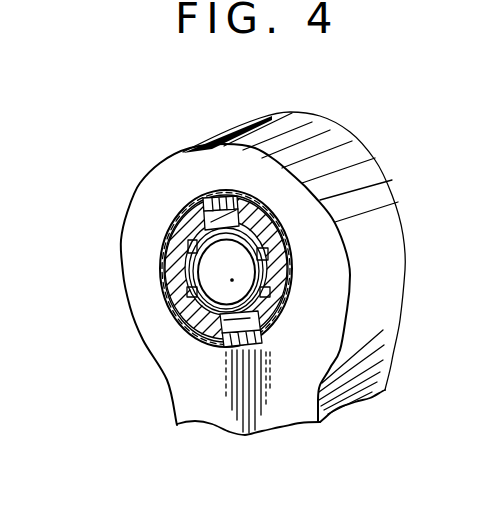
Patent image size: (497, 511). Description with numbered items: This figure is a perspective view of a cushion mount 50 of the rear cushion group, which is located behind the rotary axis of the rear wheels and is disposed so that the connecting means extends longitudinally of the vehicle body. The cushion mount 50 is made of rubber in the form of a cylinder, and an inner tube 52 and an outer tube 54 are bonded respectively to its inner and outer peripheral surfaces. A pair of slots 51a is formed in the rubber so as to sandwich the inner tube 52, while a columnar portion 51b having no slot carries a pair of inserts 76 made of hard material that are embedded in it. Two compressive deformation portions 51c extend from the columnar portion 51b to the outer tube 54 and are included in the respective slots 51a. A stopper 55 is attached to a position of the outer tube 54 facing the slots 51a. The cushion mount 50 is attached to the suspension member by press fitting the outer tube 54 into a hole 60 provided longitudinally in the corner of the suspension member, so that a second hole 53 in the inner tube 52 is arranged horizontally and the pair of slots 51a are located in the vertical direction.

The cushion mount 50 is at (262, 200).
The slots 51a is at (193, 200).
The columnar portion 51b is at (176, 286).
The compressive deformation portions 51c is at (170, 222).
The inner tube 52 is at (184, 262).
The second hole 53 is at (236, 273).
The outer tube 54 is at (165, 242).
The stopper 55 is at (214, 196).
The hole 60 is at (177, 316).
The inserts 76 is at (253, 291).